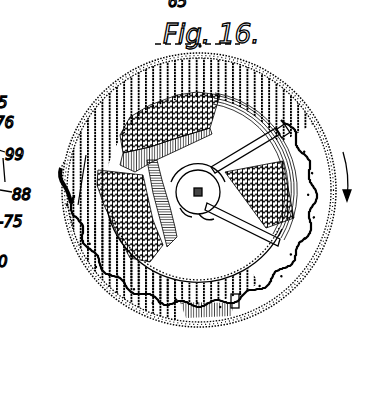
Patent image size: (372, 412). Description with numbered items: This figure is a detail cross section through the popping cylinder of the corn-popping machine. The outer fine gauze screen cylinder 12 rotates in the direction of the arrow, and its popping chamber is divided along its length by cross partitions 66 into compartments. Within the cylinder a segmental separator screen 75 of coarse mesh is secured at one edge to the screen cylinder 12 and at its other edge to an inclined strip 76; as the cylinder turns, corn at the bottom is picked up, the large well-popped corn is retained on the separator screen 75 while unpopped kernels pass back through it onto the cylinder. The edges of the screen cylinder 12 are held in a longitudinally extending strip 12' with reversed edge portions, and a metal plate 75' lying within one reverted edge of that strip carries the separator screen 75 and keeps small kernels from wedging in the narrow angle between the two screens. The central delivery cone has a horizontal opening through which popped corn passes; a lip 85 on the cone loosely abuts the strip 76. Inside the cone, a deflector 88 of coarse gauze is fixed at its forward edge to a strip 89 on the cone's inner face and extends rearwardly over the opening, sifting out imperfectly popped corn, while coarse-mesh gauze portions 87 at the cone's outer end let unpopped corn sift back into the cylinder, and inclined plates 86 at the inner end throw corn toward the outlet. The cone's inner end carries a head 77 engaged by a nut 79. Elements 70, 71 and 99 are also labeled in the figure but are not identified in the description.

The screen cylinder 12 is at (185, 190).
The longitudinally extending strip 12' is at (53, 194).
The cross partitions 66 is at (135, 90).
The tab 70 is at (223, 308).
The hatched band 71 is at (206, 311).
The separator screen 75 is at (190, 215).
The metal plate 75' is at (71, 155).
The inclined strip 76 is at (293, 140).
The head 77 is at (206, 218).
The nut 79 is at (160, 262).
The lip 85 is at (288, 128).
The inclined plates 86 is at (210, 216).
The coarse mesh gauze portions 87 is at (167, 100).
The deflector 88 is at (250, 173).
The strip 89 is at (286, 238).
The pointer arm 99 is at (236, 102).